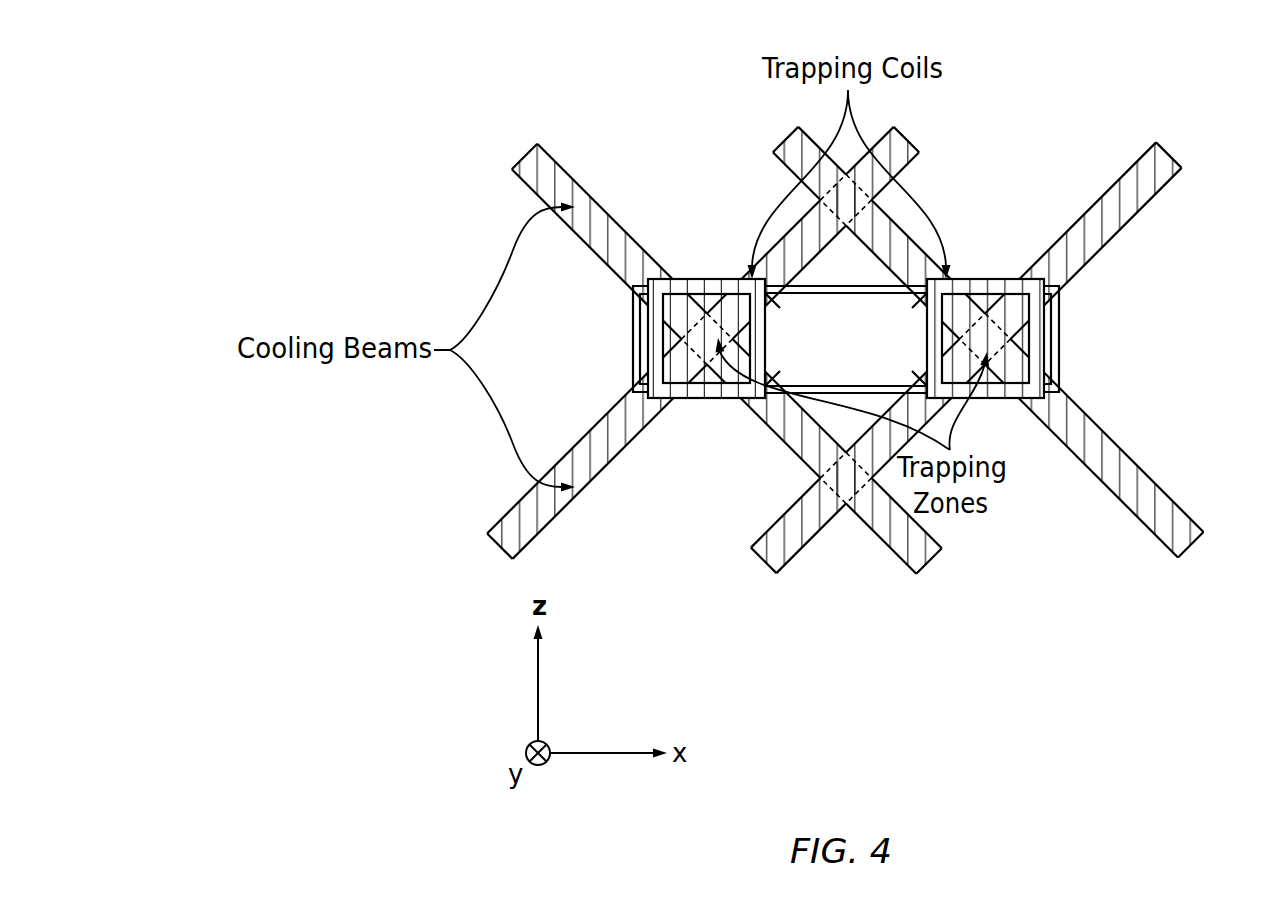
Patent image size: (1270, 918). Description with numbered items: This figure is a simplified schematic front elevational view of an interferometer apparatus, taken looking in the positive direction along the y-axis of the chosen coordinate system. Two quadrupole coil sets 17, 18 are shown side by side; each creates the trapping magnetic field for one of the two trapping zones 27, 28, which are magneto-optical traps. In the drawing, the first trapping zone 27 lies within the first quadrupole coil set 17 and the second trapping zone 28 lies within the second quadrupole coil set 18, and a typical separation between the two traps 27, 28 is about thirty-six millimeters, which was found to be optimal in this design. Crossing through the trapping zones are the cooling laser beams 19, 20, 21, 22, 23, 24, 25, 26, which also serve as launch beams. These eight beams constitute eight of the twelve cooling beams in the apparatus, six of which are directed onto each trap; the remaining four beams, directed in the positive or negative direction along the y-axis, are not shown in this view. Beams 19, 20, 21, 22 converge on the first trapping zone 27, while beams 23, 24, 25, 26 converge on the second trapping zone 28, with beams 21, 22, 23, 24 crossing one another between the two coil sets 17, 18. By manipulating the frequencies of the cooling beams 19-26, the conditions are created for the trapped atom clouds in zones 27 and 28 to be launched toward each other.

The quadrupole coil set 17 is at (705, 398).
The quadrupole coil set 18 is at (1003, 398).
The cooling laser beam 19 is at (540, 481).
The cooling laser beam 20 is at (527, 153).
The cooling laser beam 21 is at (897, 150).
The cooling laser beam 22 is at (890, 547).
The cooling laser beam 23 is at (782, 515).
The cooling laser beam 24 is at (783, 165).
The cooling laser beam 25 is at (1153, 197).
The cooling laser beam 26 is at (1110, 437).
The trapping zone 27 is at (681, 340).
The trapping zone 28 is at (959, 340).